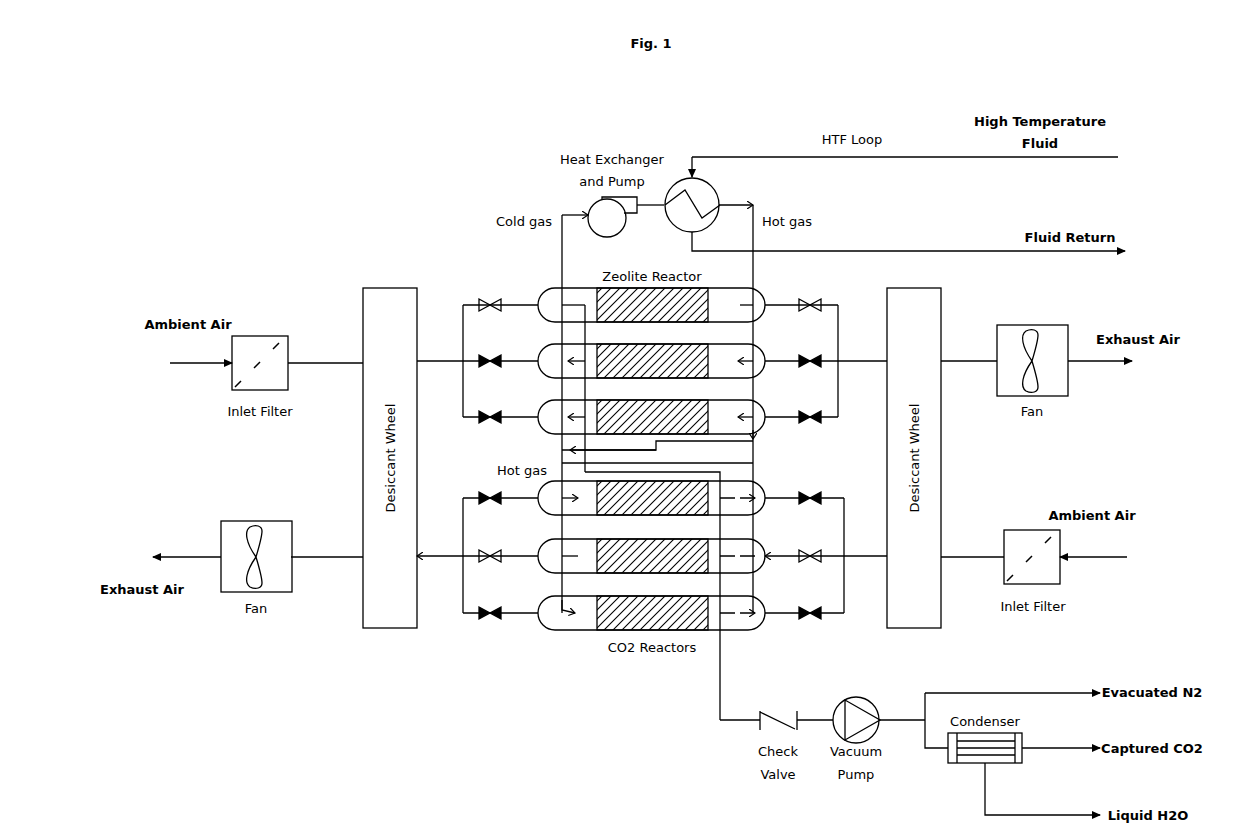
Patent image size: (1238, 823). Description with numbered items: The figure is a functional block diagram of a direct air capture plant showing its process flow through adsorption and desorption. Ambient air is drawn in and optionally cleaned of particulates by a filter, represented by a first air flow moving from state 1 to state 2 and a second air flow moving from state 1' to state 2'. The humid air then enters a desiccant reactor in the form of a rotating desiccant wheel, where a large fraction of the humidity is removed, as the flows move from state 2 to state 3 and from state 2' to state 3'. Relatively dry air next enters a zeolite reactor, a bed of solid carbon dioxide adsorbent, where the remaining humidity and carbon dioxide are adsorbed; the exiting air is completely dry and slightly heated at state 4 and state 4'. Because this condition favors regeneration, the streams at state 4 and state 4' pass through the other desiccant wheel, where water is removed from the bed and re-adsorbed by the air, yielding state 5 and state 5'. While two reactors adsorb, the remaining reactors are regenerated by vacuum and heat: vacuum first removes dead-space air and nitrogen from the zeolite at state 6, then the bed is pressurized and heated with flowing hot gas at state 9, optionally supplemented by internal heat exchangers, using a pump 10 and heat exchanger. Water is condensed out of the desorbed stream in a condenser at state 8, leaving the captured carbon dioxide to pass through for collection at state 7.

The state 1 is at (201, 353).
The state 2 is at (325, 353).
The state 3 is at (477, 351).
The state 4 is at (826, 351).
The state 5 is at (969, 351).
The state 6 is at (1012, 684).
The state 7 is at (1061, 739).
The state 8 is at (1042, 789).
The state 9 is at (895, 204).
The pump 10 is at (610, 215).
The state 1' is at (1093, 545).
The state 2' is at (972, 545).
The state 3' is at (826, 555).
The state 4' is at (477, 555).
The state 5' is at (327, 545).